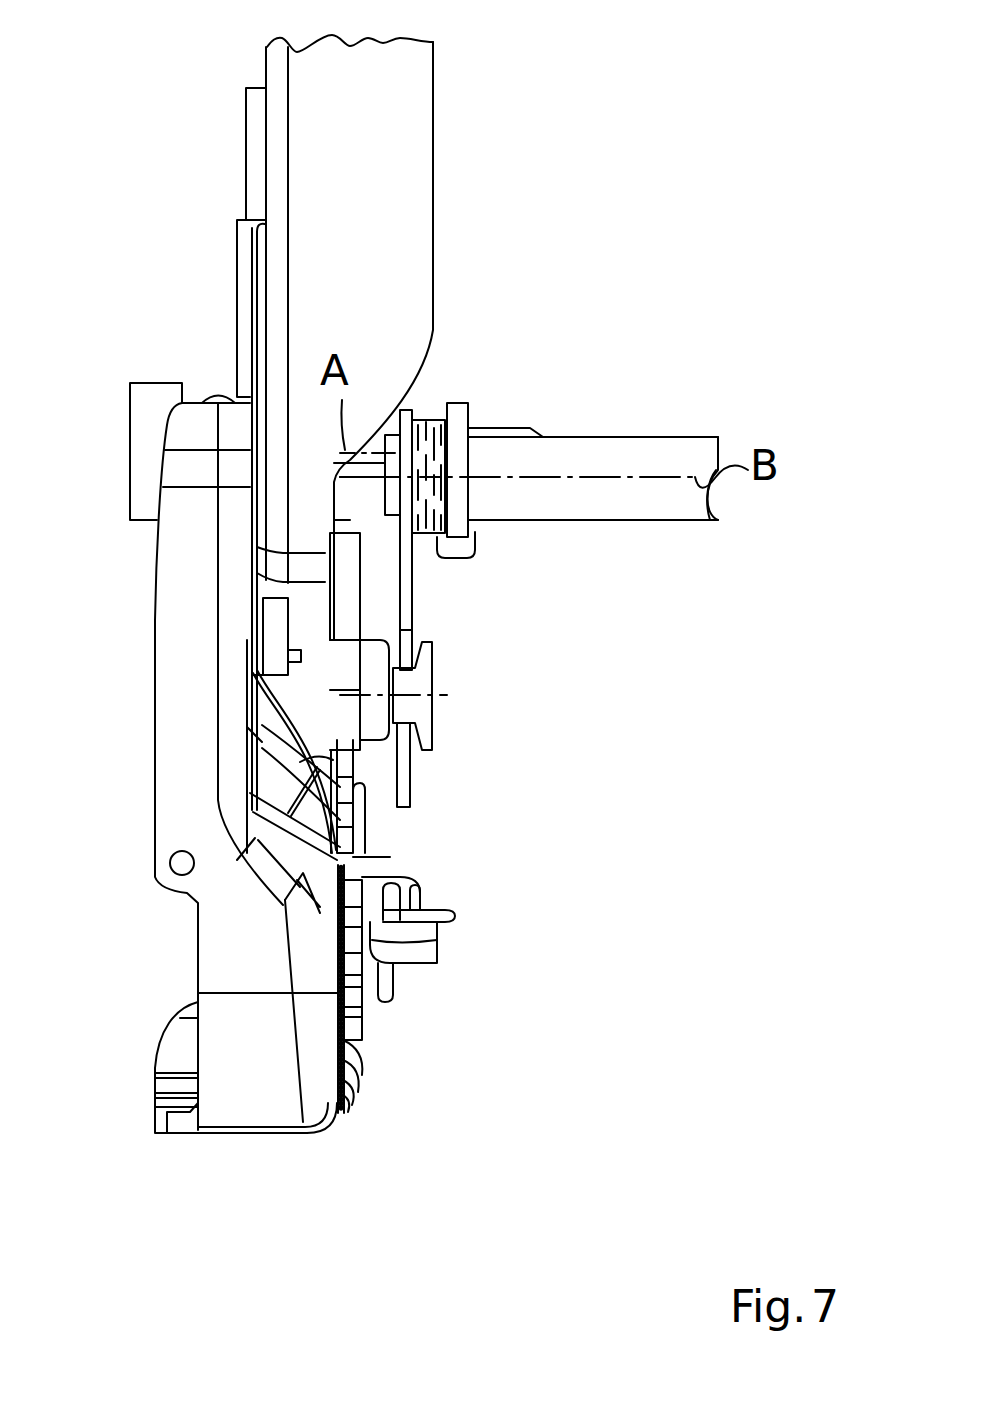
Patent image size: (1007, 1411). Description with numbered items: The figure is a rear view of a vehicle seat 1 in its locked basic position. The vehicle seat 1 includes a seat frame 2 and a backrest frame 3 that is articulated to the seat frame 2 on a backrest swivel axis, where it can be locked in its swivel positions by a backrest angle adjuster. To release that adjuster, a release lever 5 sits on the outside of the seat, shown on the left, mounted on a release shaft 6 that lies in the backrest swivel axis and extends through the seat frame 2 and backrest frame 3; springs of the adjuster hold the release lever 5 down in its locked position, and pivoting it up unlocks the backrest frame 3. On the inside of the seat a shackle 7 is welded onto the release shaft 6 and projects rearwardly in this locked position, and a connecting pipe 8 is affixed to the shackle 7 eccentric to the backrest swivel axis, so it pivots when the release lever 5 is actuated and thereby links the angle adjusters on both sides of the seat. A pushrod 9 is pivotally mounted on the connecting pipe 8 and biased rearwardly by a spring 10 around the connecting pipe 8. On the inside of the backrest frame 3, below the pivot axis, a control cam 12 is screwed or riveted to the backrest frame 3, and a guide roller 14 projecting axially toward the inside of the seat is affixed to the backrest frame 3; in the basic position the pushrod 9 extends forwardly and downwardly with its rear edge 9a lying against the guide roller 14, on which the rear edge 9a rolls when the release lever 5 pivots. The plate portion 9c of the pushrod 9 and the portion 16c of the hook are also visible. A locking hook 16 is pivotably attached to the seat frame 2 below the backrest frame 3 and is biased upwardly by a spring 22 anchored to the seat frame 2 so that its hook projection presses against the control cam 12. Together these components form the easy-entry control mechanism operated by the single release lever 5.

The vehicle seat 1 is at (685, 95).
The seat frame 2 is at (255, 1110).
The backrest frame 3 is at (422, 125).
The release lever 5 is at (147, 401).
The release shaft 6 is at (530, 426).
The shackle 7 is at (466, 404).
The connecting pipe 8 is at (690, 437).
The pushrod 9 is at (413, 588).
The rear edge 9a is at (413, 630).
The plate portion 9c is at (410, 797).
The spring 10 is at (440, 420).
The control cam 12 is at (343, 618).
The guide roller 14 is at (432, 725).
The locking hook 16 is at (362, 866).
The bracket portion 16c is at (333, 760).
The spring 22 is at (458, 913).